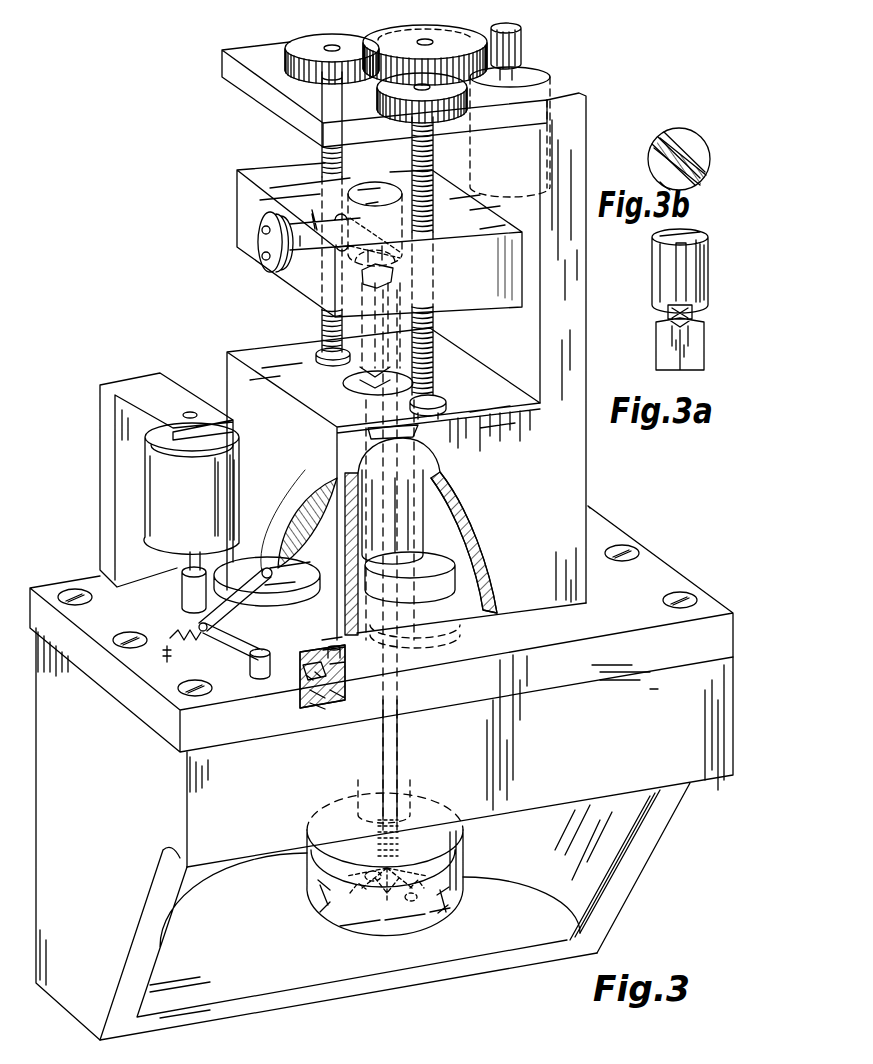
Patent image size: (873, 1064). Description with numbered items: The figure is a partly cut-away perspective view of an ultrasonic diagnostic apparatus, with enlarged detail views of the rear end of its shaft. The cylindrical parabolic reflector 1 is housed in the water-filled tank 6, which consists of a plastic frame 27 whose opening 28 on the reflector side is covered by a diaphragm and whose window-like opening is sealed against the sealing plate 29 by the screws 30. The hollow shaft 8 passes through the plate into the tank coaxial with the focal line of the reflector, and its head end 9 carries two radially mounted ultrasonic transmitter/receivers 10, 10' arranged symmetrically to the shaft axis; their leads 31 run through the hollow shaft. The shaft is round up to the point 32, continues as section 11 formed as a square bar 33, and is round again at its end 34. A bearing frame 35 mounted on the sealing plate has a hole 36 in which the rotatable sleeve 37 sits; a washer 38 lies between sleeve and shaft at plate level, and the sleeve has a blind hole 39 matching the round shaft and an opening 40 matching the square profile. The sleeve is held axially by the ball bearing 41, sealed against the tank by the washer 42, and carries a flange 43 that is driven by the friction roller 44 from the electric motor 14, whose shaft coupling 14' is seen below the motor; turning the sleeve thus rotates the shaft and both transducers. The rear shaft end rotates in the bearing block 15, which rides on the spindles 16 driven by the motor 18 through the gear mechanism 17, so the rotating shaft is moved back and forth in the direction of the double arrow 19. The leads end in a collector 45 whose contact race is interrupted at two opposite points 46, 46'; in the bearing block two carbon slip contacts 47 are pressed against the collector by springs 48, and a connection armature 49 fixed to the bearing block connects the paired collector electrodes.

In FIG. 3, the cylindrical parabolic reflector 1 is at (553, 815).
In FIG. 3, the tank 6 is at (660, 862).
In FIG. 3, the shaft 8 is at (415, 742).
In FIG. 3, the head end 9 is at (470, 856).
In FIG. 3, the ultrasonic transmitter/receiver 10 is at (314, 916).
In FIG. 3, the ultrasonic transmitter/receiver 10' is at (459, 916).
In FIG. 3, the section of the shaft 11 is at (355, 515).
In FIG. 3, the electric motor 14 is at (193, 480).
In FIG. 3, the motor shaft coupling 14' is at (176, 586).
In FIG. 3, the bearing block 15 is at (257, 172).
In FIG. 3, the spindles 16 is at (436, 322).
In FIG. 3, the gear mechanism 17 is at (532, 57).
In FIG. 3, the motor 18 is at (540, 80).
In FIG. 3, the double arrow 19 is at (213, 188).
In FIG. 3, the plastic frame 27 is at (111, 834).
In FIG. 3, the opening 28 is at (427, 963).
In FIG. 3, the sealing plate 29 is at (703, 590).
In FIG. 3, the screws 30 is at (592, 506).
In FIG. 3, the electrical connection cables 31 is at (387, 900).
In FIG. 3A, the electrical connection cables 31 is at (700, 318).
In FIG. 3, the point 32 is at (425, 518).
In FIG. 3, the square bar 33 is at (437, 365).
In FIG. 3, the end of the shaft 34 is at (400, 263).
In FIG. 3, the bearing frame 35 is at (597, 345).
In FIG. 3, the hole 36 is at (347, 383).
In FIG. 3, the rotatable sleeve 37 is at (346, 545).
In FIG. 3, the washer 38 is at (332, 673).
In FIG. 3, the blind hole 39 is at (345, 480).
In FIG. 3, the opening 40 is at (400, 428).
In FIG. 3, the ball bearing 41 is at (312, 645).
In FIG. 3, the washer 42 is at (318, 690).
In FIG. 3, the flange 43 is at (440, 592).
In FIG. 3, the friction roller 44 is at (278, 618).
In FIG. 3, the collector 45 is at (382, 186).
In FIG. 3B, the collector 45 is at (656, 148).
In FIG. 3A, the collector 45 is at (654, 277).
In FIG. 3B, the interruption point of the contact race 46 is at (717, 190).
In FIG. 3A, the interruption point of the contact race 46 is at (711, 256).
In FIG. 3B, the interruption point of the contact race 46' is at (705, 108).
In FIG. 3, the carbon slip contacts 47 is at (375, 247).
In FIG. 3, the springs 48 is at (322, 226).
In FIG. 3, the connection armature 49 is at (272, 268).